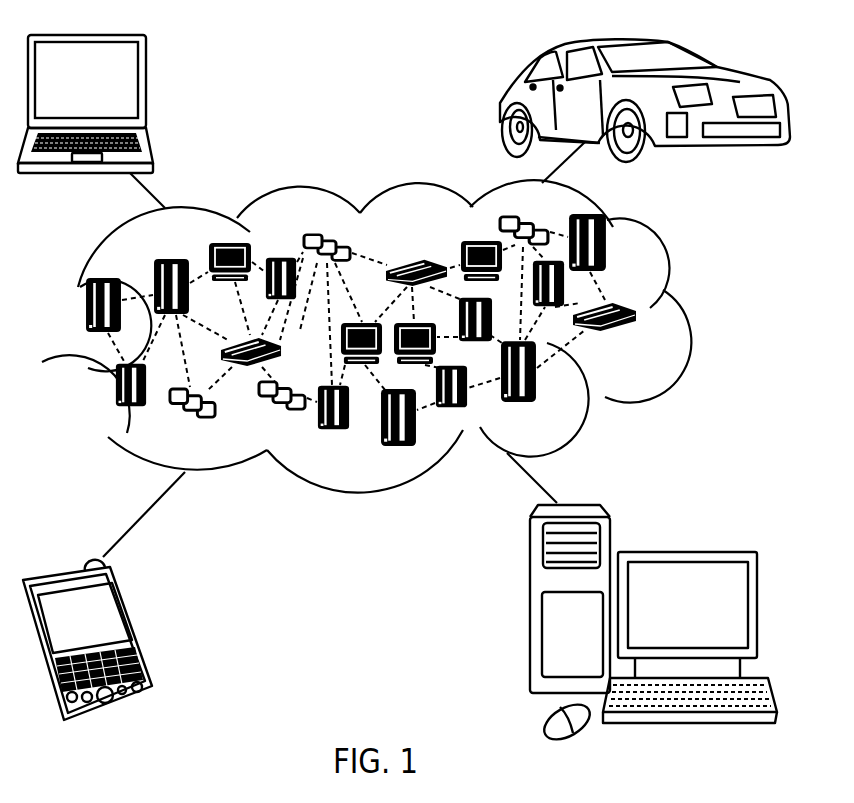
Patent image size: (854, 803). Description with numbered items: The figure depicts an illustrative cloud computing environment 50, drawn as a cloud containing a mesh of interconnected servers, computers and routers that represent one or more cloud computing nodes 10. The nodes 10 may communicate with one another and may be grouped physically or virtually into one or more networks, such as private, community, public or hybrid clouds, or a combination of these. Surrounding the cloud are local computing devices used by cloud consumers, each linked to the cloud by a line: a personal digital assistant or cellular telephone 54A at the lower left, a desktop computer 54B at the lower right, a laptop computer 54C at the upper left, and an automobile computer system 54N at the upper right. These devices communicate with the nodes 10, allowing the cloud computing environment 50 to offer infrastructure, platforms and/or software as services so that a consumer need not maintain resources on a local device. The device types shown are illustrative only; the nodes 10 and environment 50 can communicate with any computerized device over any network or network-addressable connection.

The cloud computing nodes 10 is at (404, 391).
The cloud computing environment 50 is at (683, 311).
The personal digital assistant (PDA) or cellular telephone 54A is at (137, 628).
The desktop computer 54B is at (687, 552).
The laptop computer 54C is at (146, 88).
The automobile computer system 54N is at (505, 100).